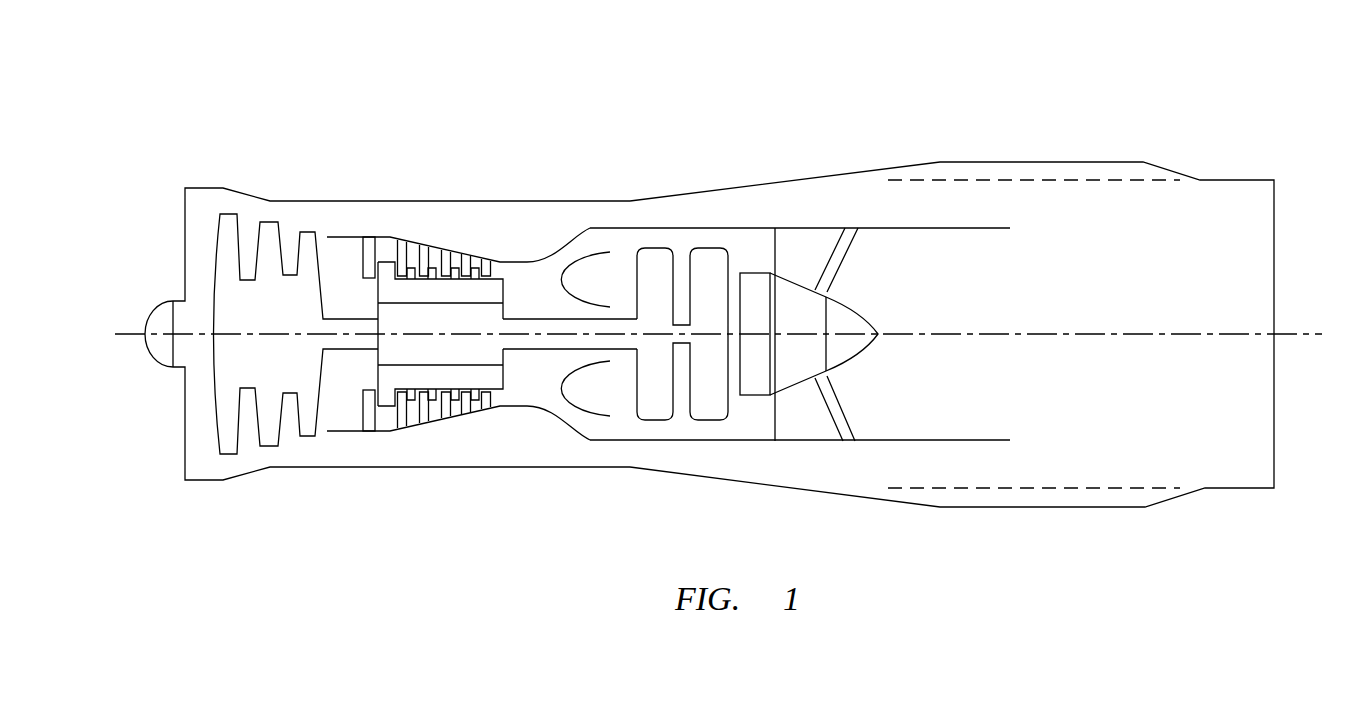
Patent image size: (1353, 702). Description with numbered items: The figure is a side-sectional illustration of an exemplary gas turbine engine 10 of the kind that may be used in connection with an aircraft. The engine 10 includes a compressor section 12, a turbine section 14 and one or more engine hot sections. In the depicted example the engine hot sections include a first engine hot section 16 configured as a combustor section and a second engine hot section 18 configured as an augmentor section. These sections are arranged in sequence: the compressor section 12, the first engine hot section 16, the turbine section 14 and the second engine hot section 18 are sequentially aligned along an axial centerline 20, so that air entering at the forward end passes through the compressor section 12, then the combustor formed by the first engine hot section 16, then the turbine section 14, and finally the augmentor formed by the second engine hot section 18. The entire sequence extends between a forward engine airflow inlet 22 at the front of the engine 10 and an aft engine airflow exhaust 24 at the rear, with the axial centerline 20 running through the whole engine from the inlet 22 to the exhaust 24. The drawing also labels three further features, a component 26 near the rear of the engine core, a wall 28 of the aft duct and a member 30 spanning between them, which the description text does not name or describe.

The gas turbine engine 10 is at (200, 105).
The compressor section 12 is at (434, 226).
The turbine section 14 is at (685, 215).
The first engine hot section 16 is at (583, 215).
The second engine hot section 18 is at (824, 211).
The axial centerline 20 is at (1303, 337).
The forward engine airflow inlet 22 is at (185, 431).
The aft engine airflow exhaust 24 is at (1277, 458).
The tail cone 26 is at (848, 364).
The exhaust duct wall 28 is at (982, 441).
The strut 30 is at (820, 415).